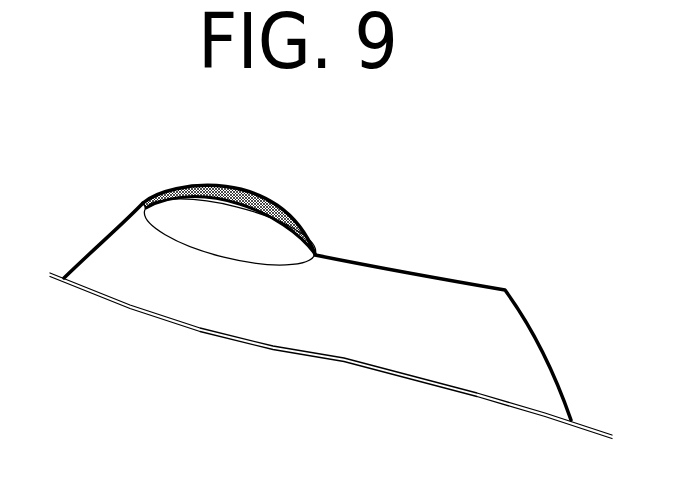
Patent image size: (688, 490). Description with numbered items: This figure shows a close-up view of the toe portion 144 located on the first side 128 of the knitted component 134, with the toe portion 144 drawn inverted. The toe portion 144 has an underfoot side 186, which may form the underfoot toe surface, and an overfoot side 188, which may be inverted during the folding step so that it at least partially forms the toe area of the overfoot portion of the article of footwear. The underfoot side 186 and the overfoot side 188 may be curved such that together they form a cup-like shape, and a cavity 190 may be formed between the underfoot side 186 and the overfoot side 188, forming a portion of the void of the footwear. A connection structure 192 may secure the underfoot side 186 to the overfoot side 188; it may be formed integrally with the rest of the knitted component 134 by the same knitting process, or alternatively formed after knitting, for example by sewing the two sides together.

The toe portion 144 is at (150, 181).
The underfoot side 186 is at (300, 214).
The overfoot side 188 is at (207, 233).
The cavity 190 is at (277, 257).
The connection structure 192 is at (237, 212).
The first side 128 is at (240, 306).
The knitted component 134 is at (458, 334).